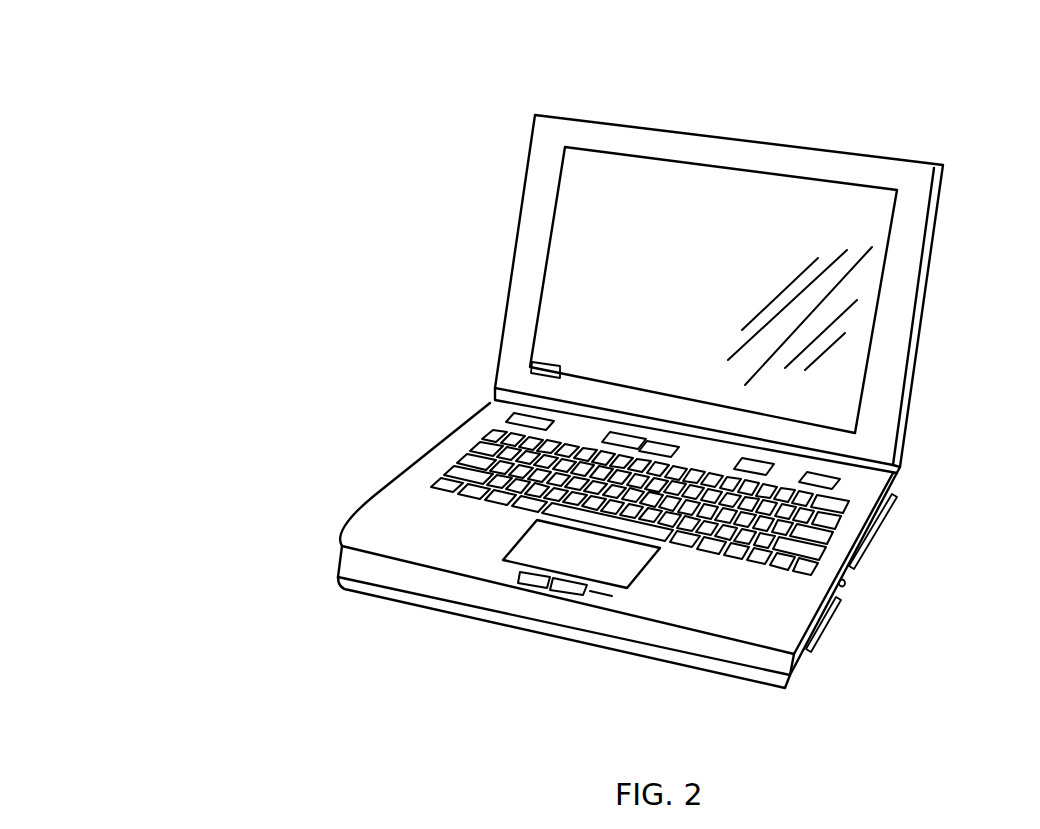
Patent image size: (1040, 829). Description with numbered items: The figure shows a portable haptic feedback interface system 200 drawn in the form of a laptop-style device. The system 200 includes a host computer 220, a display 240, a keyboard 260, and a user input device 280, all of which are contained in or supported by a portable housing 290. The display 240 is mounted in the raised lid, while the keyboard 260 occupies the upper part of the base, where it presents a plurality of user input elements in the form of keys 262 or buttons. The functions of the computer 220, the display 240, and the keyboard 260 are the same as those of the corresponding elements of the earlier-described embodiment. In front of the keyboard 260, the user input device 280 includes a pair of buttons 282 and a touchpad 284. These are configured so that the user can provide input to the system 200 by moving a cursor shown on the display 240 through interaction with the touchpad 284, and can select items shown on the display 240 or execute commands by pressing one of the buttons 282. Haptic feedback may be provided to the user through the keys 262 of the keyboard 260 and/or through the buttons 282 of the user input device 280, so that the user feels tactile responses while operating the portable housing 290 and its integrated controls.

The portable haptic feedback interface system 200 is at (286, 126).
The host computer 220 is at (386, 481).
The display 240 is at (782, 195).
The keyboard 260 is at (458, 444).
The keys 262 is at (496, 430).
The user input device 280 is at (501, 573).
The buttons 282 is at (560, 596).
The touchpad 284 is at (607, 598).
The portable housing 290 is at (898, 485).